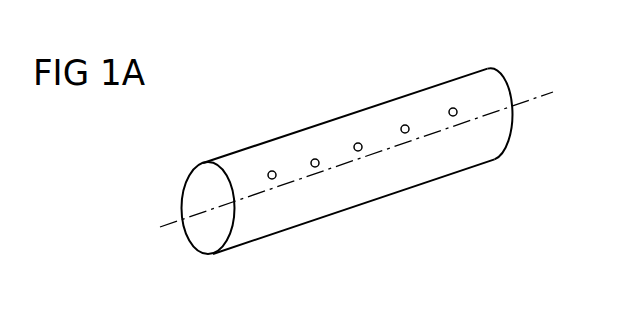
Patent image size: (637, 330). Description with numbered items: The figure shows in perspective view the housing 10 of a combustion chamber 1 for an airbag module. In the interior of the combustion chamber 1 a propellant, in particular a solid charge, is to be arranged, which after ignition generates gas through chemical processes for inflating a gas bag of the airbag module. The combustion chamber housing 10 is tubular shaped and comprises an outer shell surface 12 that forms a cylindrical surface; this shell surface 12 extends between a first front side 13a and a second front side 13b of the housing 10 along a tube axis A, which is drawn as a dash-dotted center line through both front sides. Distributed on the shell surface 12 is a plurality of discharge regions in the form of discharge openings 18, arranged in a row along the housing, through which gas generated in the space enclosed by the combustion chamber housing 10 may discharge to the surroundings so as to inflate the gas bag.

The combustion chamber 1 is at (374, 165).
The combustion chamber housing 10 is at (361, 165).
The shell surface 12 is at (256, 146).
The first front side 13a is at (202, 232).
The second front side 13b is at (509, 86).
The discharge openings 18 is at (404, 124).
The tube axis A is at (542, 97).